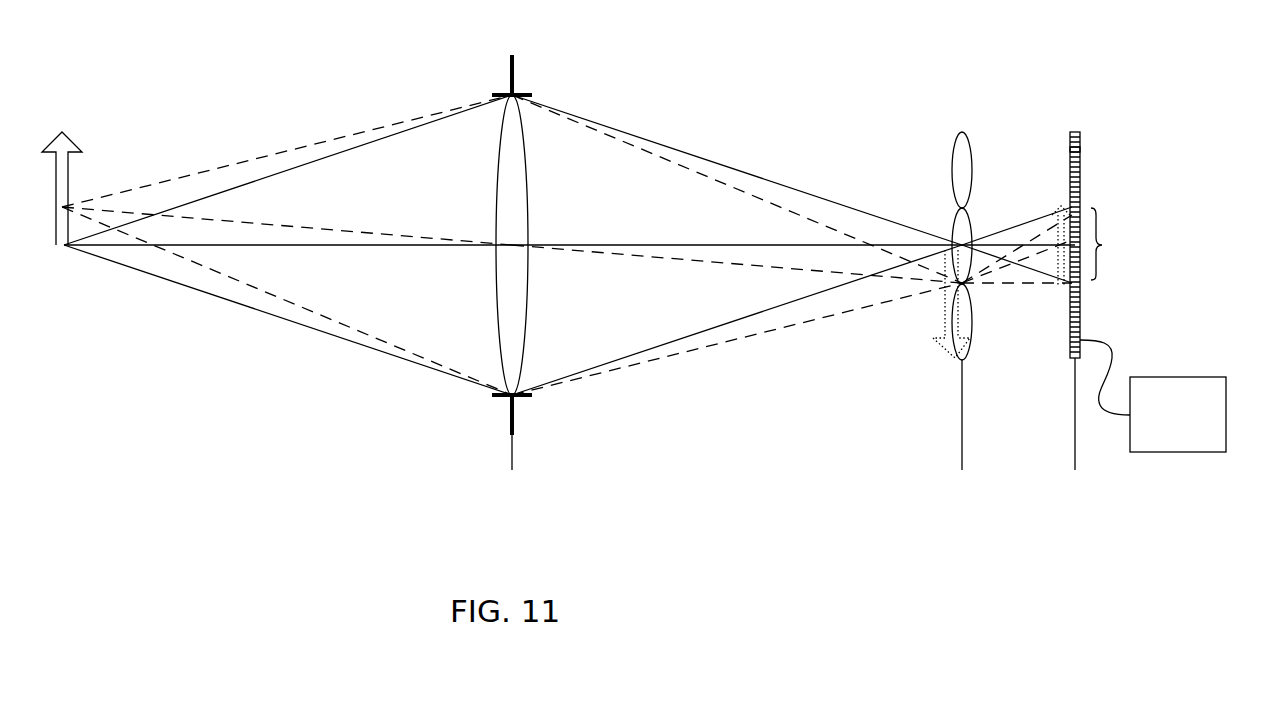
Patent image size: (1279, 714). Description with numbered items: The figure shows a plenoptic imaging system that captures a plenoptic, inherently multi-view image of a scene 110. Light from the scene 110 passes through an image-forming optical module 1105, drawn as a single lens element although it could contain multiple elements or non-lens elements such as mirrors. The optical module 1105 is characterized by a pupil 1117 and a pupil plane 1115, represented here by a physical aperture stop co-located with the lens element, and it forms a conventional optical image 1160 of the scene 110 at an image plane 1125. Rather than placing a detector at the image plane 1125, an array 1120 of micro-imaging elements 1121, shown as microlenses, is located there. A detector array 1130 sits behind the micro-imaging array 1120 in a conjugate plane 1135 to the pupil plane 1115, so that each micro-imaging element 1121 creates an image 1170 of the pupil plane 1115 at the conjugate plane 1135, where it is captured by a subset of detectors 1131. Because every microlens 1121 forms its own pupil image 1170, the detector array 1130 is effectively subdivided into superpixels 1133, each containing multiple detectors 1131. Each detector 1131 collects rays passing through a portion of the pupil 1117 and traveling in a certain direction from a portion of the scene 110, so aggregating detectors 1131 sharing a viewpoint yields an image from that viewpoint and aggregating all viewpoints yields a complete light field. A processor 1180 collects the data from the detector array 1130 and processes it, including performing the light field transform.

The scene 110 is at (62, 178).
The image-forming optical module 1105 is at (492, 50).
The pupil plane 1115 is at (512, 468).
The pupil 1117 is at (495, 415).
The array of micro-imaging elements 1120 is at (977, 231).
The micro-imaging element 1121 is at (936, 125).
The image plane 1125 is at (964, 431).
The detector array 1130 is at (1104, 230).
The detector 1131 is at (1104, 153).
The superpixel 1133 is at (1125, 244).
The conjugate plane 1135 is at (1076, 430).
The optical image 1160 is at (941, 320).
The image of the pupil 1170 is at (1046, 236).
The processor 1180 is at (1153, 396).